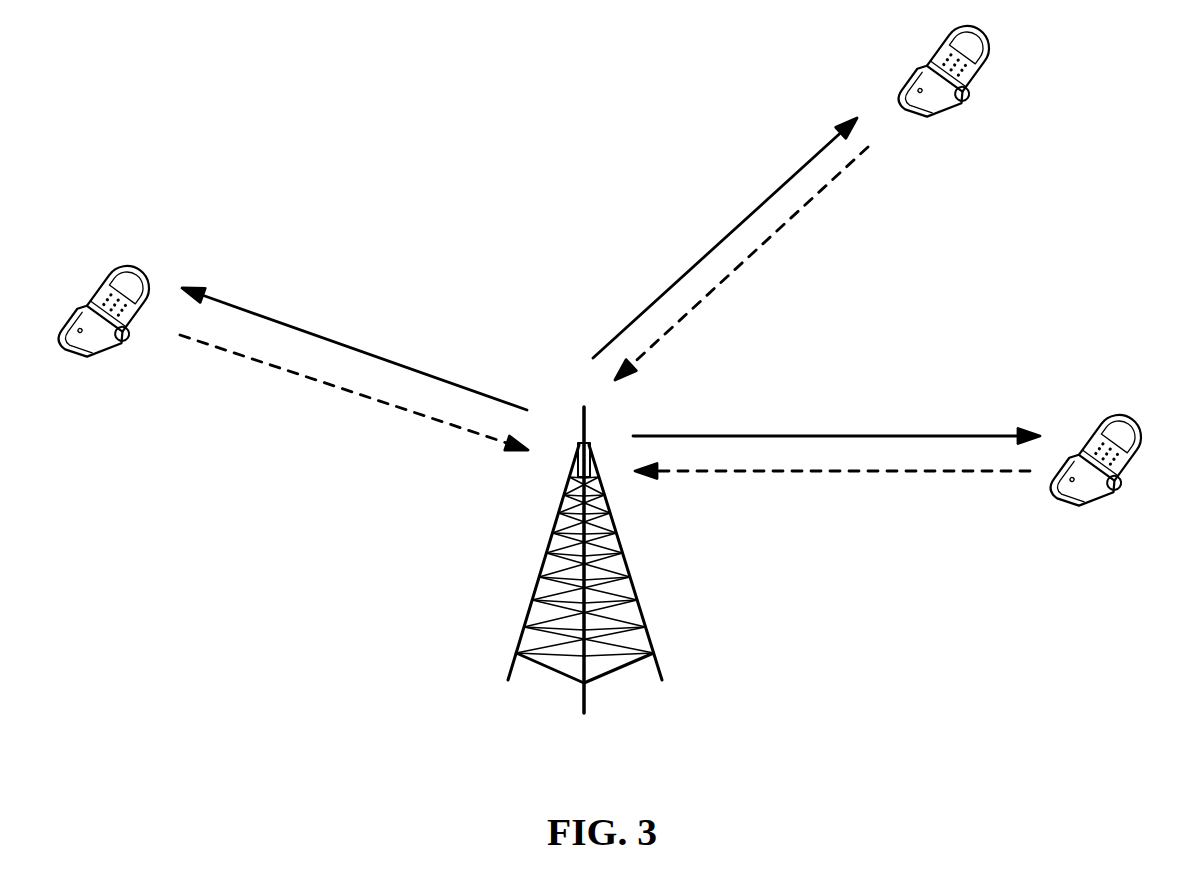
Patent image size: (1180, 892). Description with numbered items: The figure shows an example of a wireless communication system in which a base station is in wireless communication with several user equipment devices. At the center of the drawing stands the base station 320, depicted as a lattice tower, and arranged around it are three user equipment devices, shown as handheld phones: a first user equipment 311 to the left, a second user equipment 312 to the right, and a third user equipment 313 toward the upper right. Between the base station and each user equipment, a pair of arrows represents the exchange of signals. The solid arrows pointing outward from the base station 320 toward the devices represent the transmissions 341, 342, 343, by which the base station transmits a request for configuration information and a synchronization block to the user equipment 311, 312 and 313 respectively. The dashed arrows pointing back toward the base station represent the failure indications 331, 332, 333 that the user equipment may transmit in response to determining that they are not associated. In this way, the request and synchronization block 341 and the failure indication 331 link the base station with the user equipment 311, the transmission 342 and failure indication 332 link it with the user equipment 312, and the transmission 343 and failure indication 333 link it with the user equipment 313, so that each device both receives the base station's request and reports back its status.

The user equipment 311 is at (118, 352).
The user equipment 312 is at (1108, 498).
The user equipment 313 is at (958, 108).
The base station 320 is at (640, 637).
The failure indication 331 is at (400, 405).
The failure indication 332 is at (797, 472).
The failure indication 333 is at (767, 237).
The request for configuration information and synchronization block 341 is at (287, 328).
The request for configuration information and synchronization block 342 is at (948, 433).
The request for configuration information and synchronization block 343 is at (775, 188).